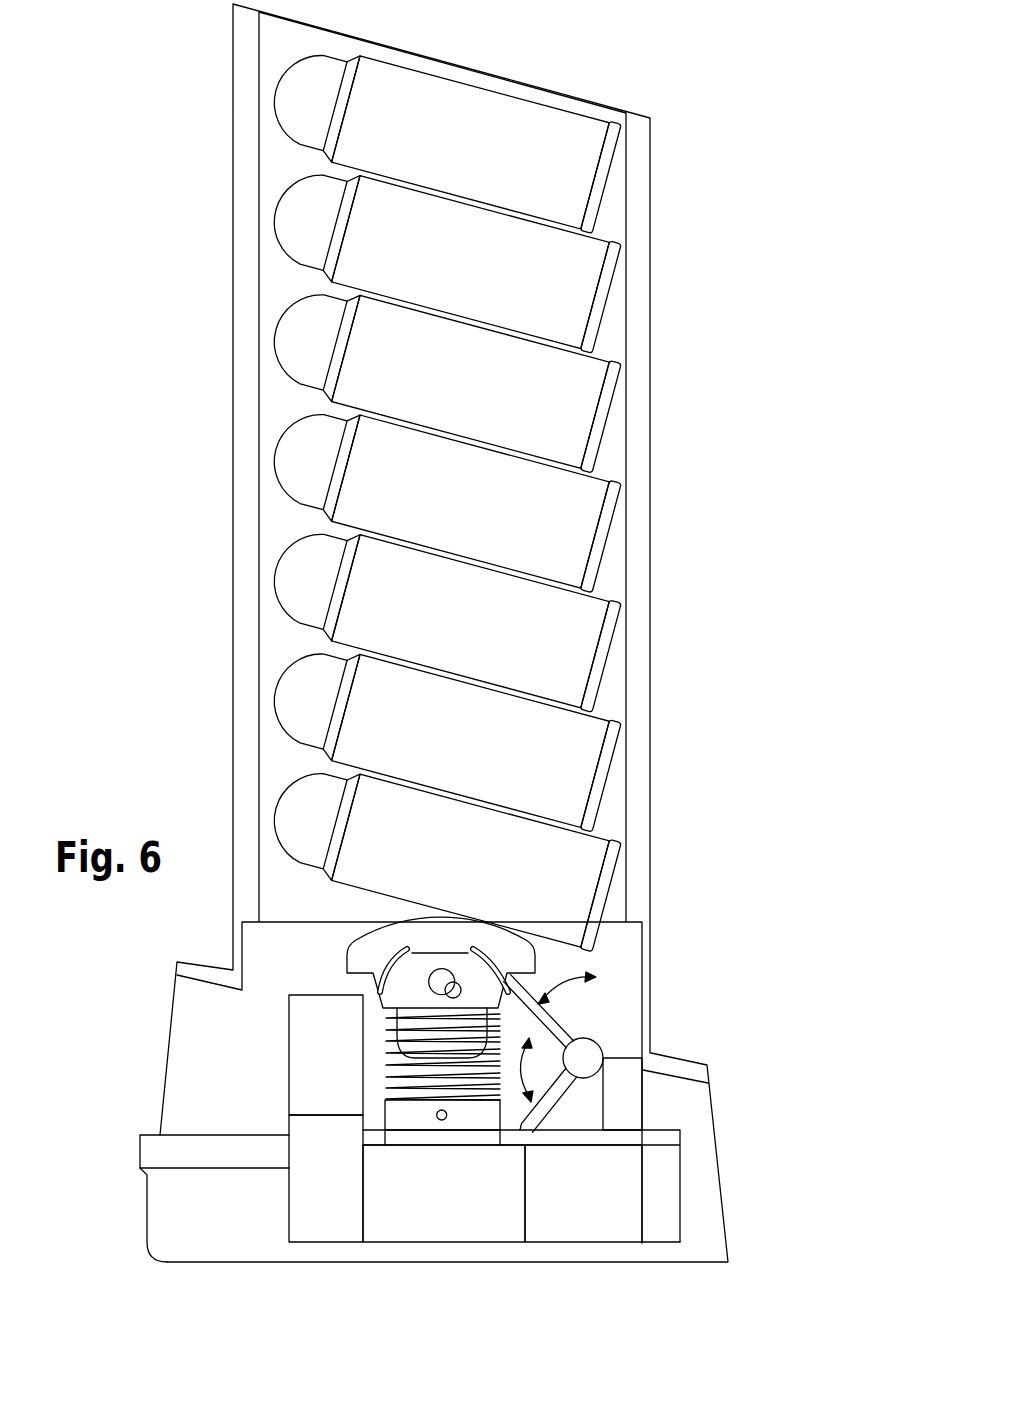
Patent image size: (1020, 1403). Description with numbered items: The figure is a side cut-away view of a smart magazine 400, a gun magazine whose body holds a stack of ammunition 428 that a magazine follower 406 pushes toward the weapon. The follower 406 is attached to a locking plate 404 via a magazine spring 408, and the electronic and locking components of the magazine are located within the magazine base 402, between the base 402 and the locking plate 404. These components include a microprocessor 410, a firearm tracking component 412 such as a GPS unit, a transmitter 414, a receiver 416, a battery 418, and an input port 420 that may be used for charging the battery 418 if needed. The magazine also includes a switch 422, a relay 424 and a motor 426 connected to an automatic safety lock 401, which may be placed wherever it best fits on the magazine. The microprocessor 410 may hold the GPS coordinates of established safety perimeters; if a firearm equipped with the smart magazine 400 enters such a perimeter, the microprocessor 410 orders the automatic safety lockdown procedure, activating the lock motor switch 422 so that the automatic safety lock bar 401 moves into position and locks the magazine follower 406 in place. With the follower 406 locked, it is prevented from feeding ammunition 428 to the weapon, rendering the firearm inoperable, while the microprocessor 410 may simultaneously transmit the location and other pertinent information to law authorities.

The smart magazine 400 is at (688, 134).
The automatic safety lock 401 is at (553, 1028).
The magazine base 402 is at (230, 1218).
The locking plate 404 is at (470, 1115).
The magazine follower 406 is at (487, 942).
The magazine spring 408 is at (387, 1063).
The microprocessor 410 is at (310, 1075).
The firearm tracking component 412 is at (662, 1193).
The transmitter 414 is at (423, 1207).
The receiver 416 is at (570, 1209).
The battery 418 is at (308, 1203).
The input port 420 is at (203, 1150).
The switch 422 is at (620, 1138).
The relay 424 is at (458, 1135).
The motor 426 is at (627, 1088).
The ammunition 428 is at (555, 408).